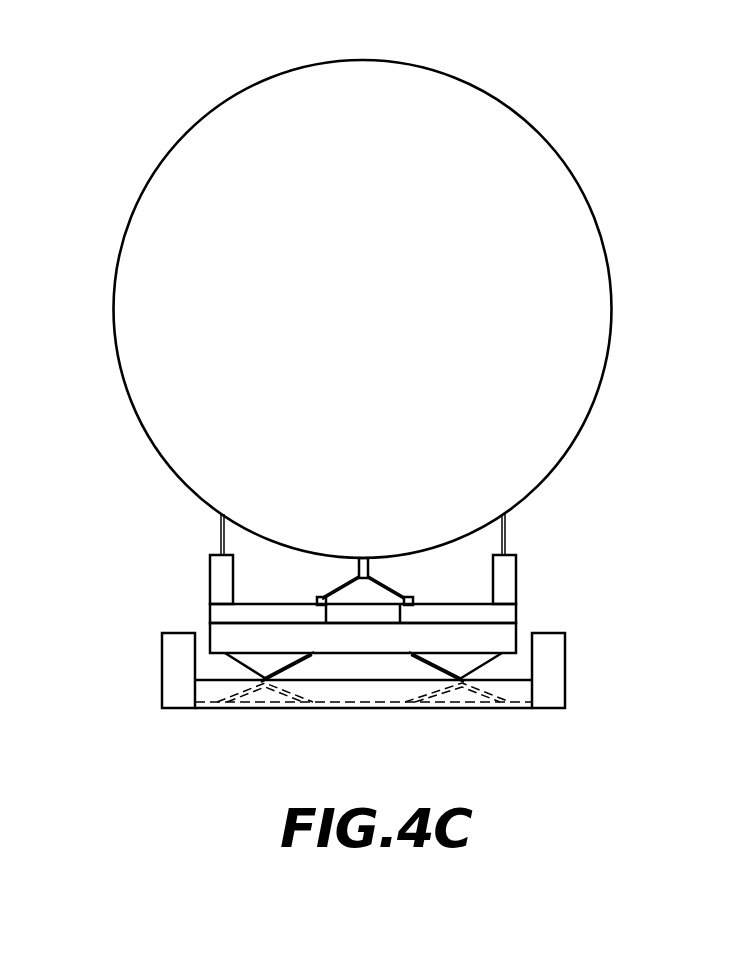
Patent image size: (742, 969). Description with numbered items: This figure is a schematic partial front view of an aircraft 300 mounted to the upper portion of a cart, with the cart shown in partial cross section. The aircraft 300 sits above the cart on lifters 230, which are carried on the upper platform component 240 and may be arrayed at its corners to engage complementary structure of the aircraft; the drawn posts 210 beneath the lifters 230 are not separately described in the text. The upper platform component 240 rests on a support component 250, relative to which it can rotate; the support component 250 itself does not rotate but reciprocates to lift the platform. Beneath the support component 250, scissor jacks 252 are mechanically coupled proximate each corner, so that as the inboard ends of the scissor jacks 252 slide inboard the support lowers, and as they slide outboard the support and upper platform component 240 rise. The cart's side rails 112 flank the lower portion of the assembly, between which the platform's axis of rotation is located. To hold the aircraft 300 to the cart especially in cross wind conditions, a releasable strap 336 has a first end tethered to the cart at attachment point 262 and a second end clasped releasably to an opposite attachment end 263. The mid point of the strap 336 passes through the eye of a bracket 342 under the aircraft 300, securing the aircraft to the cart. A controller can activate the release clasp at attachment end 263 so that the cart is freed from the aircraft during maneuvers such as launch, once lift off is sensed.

The aircraft 300 is at (612, 310).
The lifter 230 is at (181, 521).
The support pillar 210 is at (210, 567).
The upper platform component 240 is at (218, 614).
The support component 250 is at (232, 637).
The bracket 342 is at (364, 558).
The releasable strap 336 is at (352, 576).
The attachment point 262 is at (318, 598).
The attachment end 263 is at (413, 598).
The side rail 112 is at (162, 672).
The scissor jack 252 is at (310, 656).